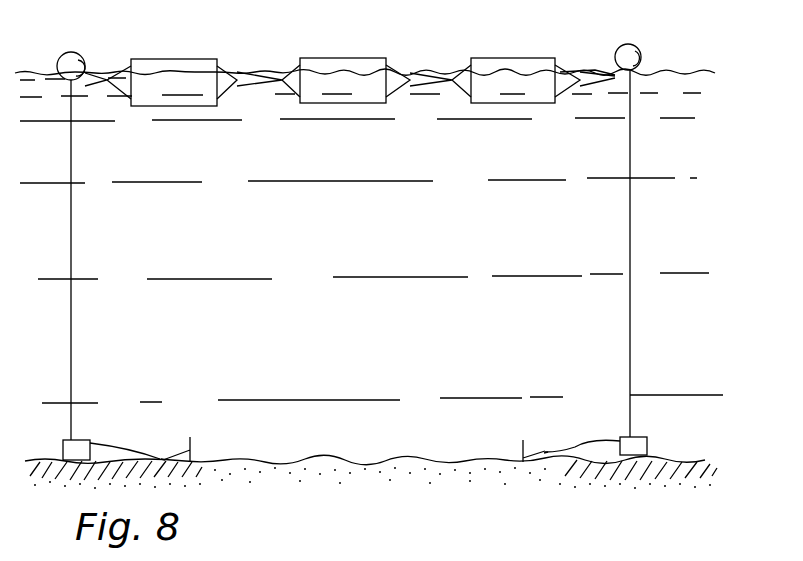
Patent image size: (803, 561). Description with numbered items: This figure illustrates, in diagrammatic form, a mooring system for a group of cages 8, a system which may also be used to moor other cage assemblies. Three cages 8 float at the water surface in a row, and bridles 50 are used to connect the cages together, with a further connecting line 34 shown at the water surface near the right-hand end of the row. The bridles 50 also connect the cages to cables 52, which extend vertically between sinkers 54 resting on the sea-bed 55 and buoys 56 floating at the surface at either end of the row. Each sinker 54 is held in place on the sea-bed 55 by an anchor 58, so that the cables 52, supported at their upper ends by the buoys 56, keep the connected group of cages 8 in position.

The cage 8 is at (188, 56).
The connecting line 34 is at (587, 66).
The bridle 50 is at (262, 74).
The cable 52 is at (73, 253).
The sinker 54 is at (78, 447).
The sea-bed 55 is at (368, 458).
The buoy 56 is at (71, 53).
The anchor 58 is at (190, 460).